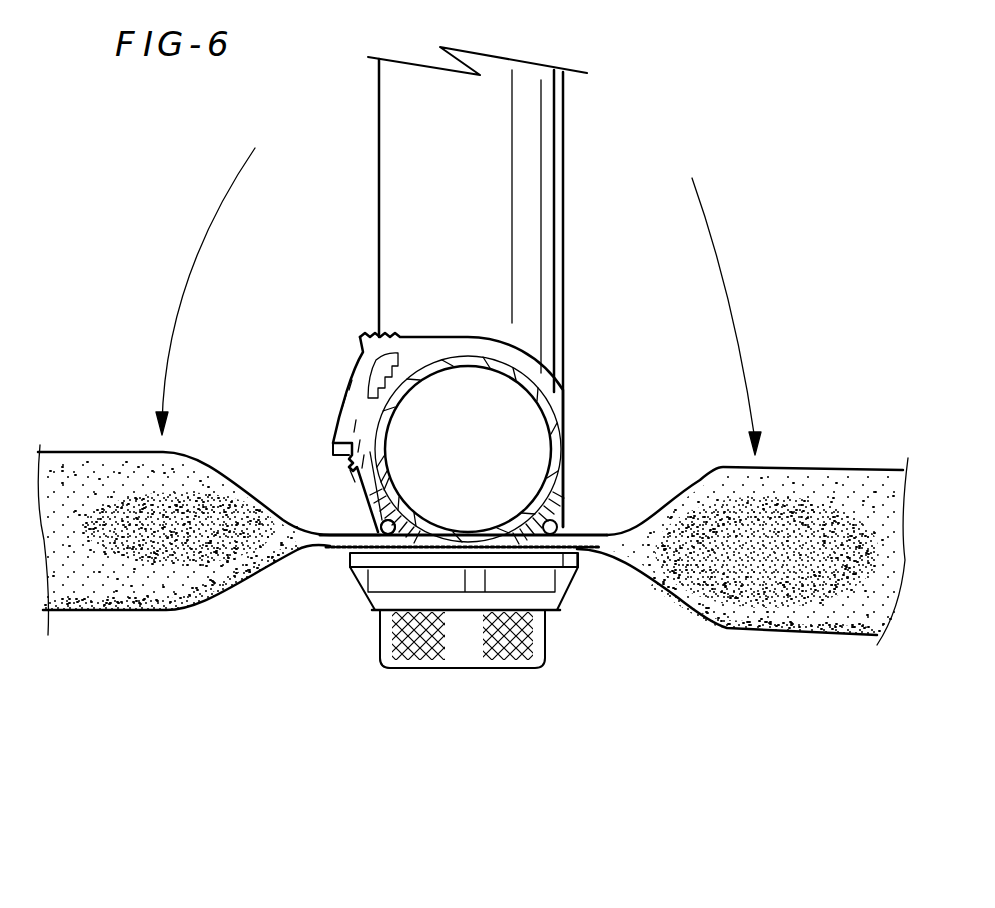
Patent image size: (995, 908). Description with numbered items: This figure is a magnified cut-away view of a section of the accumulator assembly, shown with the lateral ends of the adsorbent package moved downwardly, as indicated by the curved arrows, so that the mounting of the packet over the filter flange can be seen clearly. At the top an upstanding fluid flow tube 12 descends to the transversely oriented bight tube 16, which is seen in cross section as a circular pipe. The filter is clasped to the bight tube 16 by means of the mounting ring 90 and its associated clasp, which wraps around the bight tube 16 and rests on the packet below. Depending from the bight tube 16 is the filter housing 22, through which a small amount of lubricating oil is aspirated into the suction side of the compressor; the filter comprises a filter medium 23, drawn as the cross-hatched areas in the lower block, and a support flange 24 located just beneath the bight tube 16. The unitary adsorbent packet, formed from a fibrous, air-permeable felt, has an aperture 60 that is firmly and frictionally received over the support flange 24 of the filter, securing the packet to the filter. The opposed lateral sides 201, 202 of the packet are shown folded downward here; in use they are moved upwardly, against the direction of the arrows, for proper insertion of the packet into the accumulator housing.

The fluid flow tube 12 is at (393, 128).
The bight tube 16 is at (502, 370).
The filter housing 22 is at (512, 672).
The filter medium 23 is at (388, 663).
The support flange 24 is at (580, 572).
The aperture 60 is at (363, 524).
The mounting ring 90 is at (453, 345).
The lateral side of packet 201 is at (80, 452).
The lateral side of packet 202 is at (817, 468).